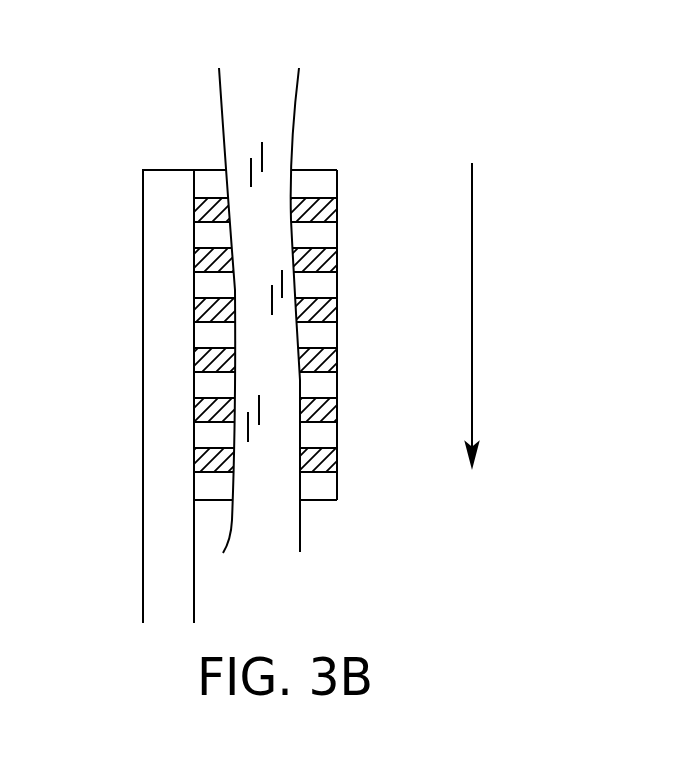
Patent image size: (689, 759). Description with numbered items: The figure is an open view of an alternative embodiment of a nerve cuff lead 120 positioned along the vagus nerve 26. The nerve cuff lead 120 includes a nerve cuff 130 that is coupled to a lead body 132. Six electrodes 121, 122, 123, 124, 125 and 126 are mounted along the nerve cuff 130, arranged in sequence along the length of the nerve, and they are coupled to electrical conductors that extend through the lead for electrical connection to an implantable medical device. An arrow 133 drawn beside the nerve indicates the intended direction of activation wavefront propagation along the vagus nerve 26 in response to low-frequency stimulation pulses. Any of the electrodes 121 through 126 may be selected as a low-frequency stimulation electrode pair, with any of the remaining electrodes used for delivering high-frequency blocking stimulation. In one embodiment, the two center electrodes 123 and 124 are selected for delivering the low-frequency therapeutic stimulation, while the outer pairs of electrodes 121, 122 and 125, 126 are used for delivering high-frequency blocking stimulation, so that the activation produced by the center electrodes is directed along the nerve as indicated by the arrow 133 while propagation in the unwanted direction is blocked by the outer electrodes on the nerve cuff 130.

The vagus nerve 26 is at (297, 95).
The nerve cuff lead 120 is at (144, 360).
The electrode 121 is at (337, 212).
The electrode 122 is at (337, 262).
The electrode 123 is at (337, 312).
The electrode 124 is at (337, 362).
The electrode 125 is at (337, 413).
The electrode 126 is at (337, 463).
The nerve cuff 130 is at (207, 170).
The lead body 132 is at (162, 543).
The arrow 133 is at (472, 262).